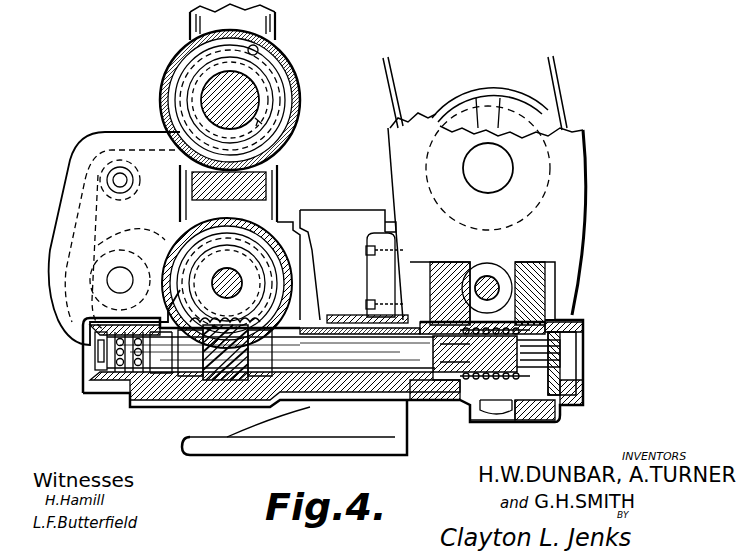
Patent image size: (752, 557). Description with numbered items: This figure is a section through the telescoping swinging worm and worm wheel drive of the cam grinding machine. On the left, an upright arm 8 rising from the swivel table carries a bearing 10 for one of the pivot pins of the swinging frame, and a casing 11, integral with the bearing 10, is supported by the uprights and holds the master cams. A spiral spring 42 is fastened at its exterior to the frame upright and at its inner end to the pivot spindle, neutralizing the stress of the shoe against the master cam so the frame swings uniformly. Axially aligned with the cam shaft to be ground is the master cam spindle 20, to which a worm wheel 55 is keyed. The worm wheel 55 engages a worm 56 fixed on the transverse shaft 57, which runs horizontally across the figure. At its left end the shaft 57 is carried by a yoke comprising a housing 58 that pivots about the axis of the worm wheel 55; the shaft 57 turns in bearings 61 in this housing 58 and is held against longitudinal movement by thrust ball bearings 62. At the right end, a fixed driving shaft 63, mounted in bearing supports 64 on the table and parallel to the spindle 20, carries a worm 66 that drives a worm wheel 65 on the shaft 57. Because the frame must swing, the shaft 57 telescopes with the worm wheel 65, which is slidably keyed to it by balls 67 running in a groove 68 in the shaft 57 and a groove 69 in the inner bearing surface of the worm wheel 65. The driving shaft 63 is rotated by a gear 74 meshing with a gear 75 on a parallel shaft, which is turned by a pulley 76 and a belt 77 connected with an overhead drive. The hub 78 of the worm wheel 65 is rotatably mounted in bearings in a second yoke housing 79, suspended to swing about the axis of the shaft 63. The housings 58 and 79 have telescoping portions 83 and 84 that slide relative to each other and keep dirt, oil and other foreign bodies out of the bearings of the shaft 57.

The upright arm 8 is at (294, 427).
The bearing 10 is at (340, 224).
The casing 11 is at (78, 190).
The master cam spindle 20 is at (232, 281).
The spiral spring 42 is at (190, 82).
The worm wheel 55 is at (250, 286).
The worm 56 is at (228, 382).
The transverse shaft 57 is at (395, 352).
The housing 58 is at (185, 395).
The bearing 61 is at (148, 395).
The thrust ball bearing 62 is at (108, 395).
The driving shaft 63 is at (510, 263).
The bearing support 64 is at (566, 290).
The worm wheel 65 is at (487, 414).
The worm 66 is at (506, 286).
The ball 67 is at (514, 412).
The groove 68 is at (576, 386).
The groove 69 is at (552, 342).
The gear 74 is at (528, 225).
The gear 75 is at (548, 170).
The pulley 76 is at (472, 93).
The belt 77 is at (552, 82).
The hub 78 is at (568, 312).
The housing 79 is at (584, 345).
The telescoping portion 83 is at (318, 320).
The telescoping portion 84 is at (342, 318).